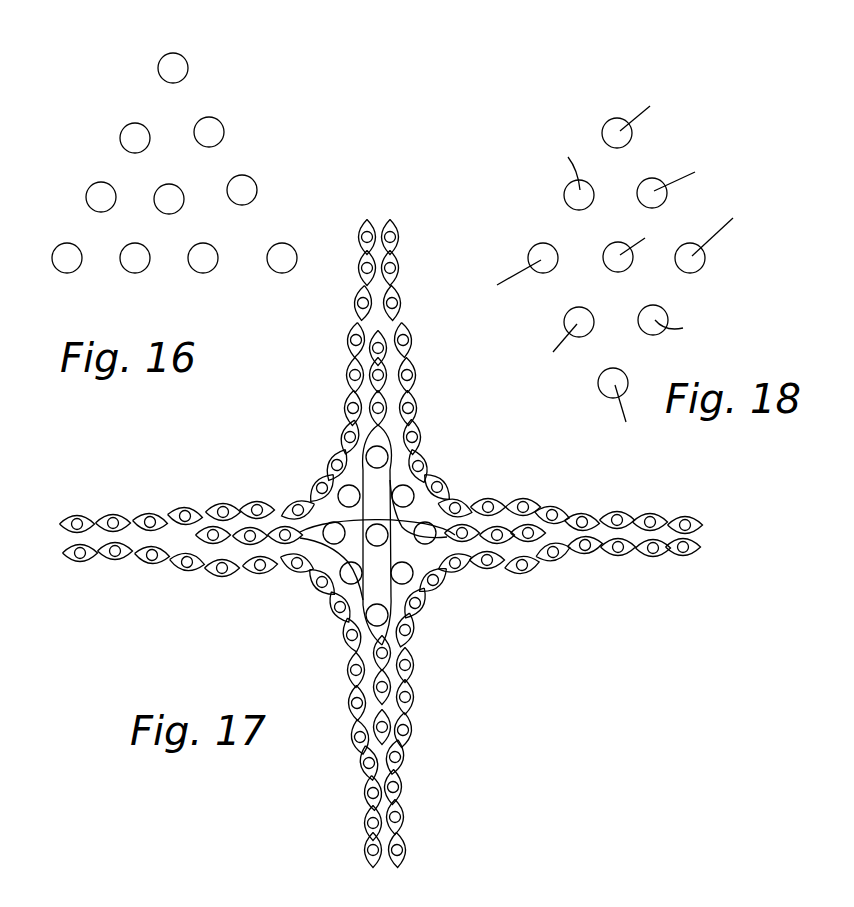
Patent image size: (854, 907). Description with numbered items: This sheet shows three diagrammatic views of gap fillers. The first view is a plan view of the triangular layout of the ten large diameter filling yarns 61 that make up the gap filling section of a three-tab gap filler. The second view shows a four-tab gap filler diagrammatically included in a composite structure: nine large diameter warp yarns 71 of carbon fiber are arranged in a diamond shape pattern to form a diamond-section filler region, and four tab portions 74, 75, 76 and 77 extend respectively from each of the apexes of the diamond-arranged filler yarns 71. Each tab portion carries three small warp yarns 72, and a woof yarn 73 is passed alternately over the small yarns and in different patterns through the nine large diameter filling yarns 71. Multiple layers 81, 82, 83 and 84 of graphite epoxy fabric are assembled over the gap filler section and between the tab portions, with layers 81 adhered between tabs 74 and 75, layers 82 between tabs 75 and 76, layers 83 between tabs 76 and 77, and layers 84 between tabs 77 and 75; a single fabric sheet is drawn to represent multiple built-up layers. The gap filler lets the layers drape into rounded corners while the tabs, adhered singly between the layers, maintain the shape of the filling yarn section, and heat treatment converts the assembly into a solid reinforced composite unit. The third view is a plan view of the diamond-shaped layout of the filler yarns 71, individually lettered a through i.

In FIG. 16, the large diameter filling yarns 61 is at (88, 176).
In FIG. 18, the large diameter warp yarns 71 is at (576, 196).
In FIG. 17, the large diameter warp yarns 71 is at (368, 614).
In FIG. 17, the small warp yarns 72 is at (384, 686).
In FIG. 17, the woof yarn 73 is at (323, 560).
In FIG. 17, the tab portion 74 is at (392, 699).
In FIG. 17, the tab portion 75 is at (247, 532).
In FIG. 17, the tab portion 76 is at (380, 372).
In FIG. 17, the tab portion 77 is at (538, 562).
In FIG. 17, the multiple layers 81 is at (331, 649).
In FIG. 17, the multiple layers 82 is at (314, 472).
In FIG. 17, the multiple layers 83 is at (455, 491).
In FIG. 17, the multiple layers 84 is at (446, 594).